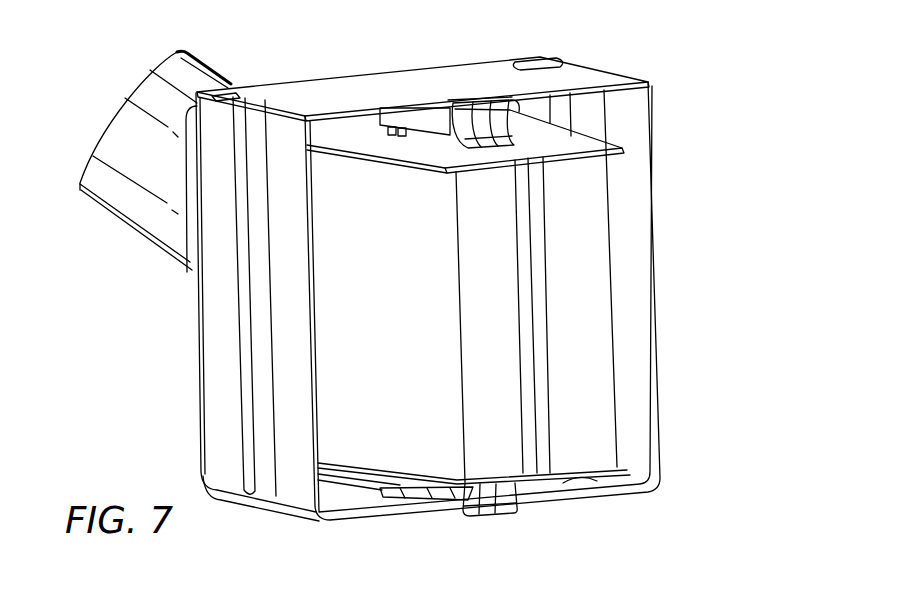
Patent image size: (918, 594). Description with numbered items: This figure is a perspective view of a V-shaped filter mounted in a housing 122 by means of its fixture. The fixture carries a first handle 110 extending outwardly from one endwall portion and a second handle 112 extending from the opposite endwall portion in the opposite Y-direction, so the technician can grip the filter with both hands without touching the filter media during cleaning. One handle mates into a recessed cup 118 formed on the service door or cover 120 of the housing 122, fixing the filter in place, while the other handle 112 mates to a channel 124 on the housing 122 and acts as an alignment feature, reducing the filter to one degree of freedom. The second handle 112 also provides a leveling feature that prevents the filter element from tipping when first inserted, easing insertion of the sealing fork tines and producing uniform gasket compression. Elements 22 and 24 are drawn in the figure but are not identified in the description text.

The inner housing 22 is at (400, 453).
The back wall 24 is at (590, 405).
The first handle 110 is at (483, 122).
The second handle 112 is at (503, 500).
The recessed cup 118 is at (488, 97).
The service door or cover 120 is at (585, 75).
The housing 122 is at (687, 76).
The channel 124 is at (488, 523).